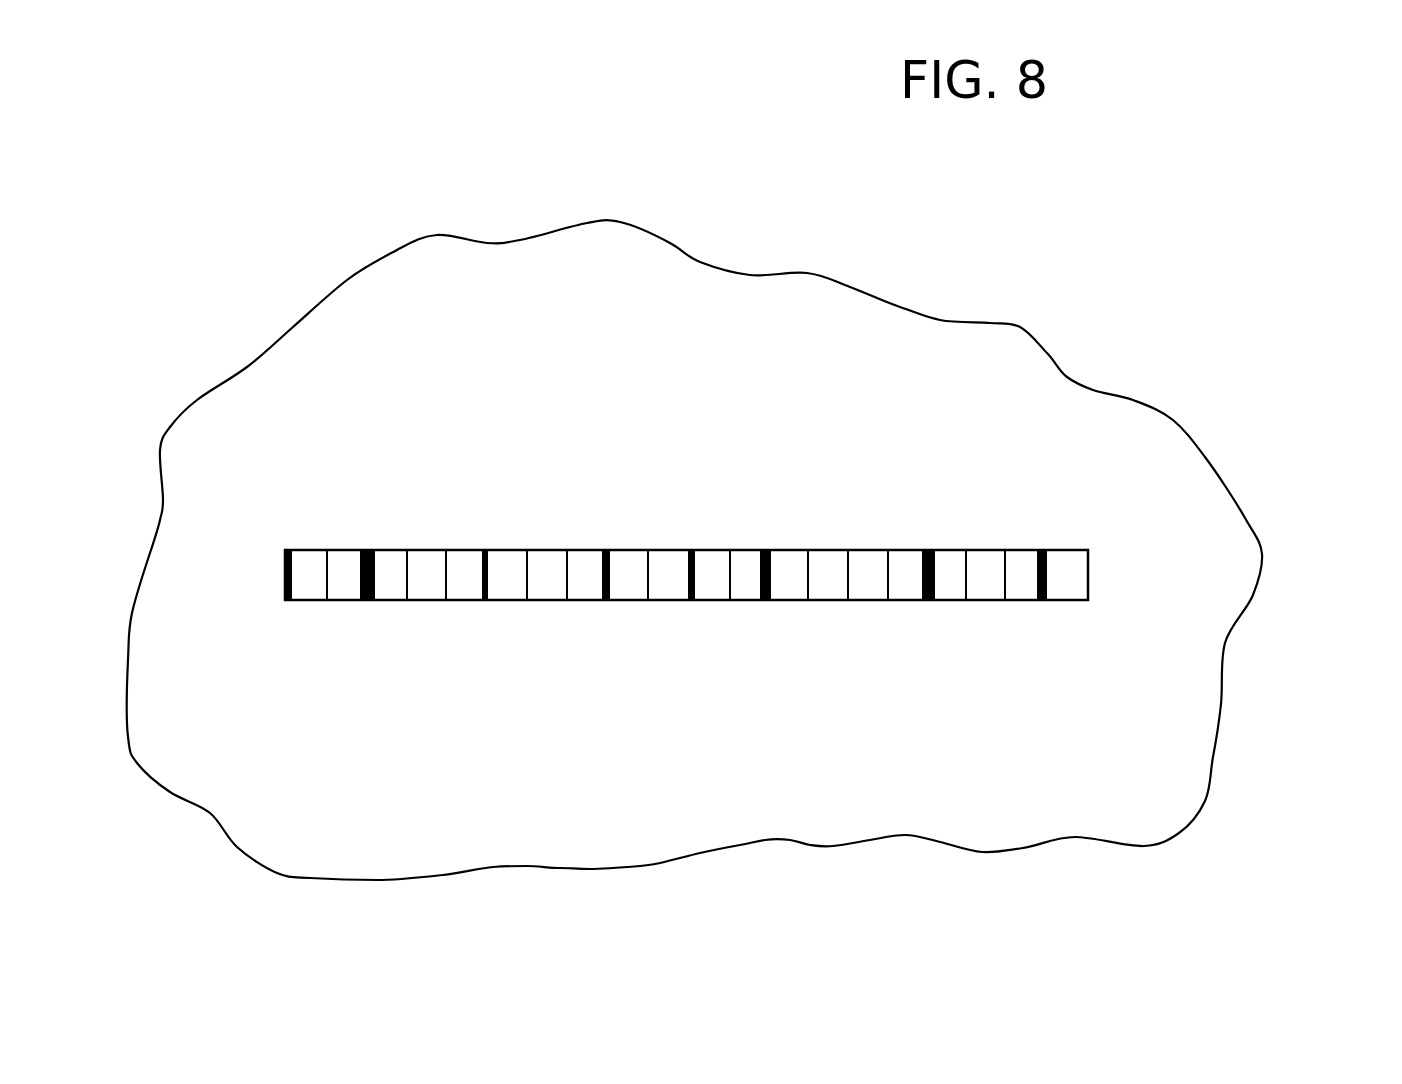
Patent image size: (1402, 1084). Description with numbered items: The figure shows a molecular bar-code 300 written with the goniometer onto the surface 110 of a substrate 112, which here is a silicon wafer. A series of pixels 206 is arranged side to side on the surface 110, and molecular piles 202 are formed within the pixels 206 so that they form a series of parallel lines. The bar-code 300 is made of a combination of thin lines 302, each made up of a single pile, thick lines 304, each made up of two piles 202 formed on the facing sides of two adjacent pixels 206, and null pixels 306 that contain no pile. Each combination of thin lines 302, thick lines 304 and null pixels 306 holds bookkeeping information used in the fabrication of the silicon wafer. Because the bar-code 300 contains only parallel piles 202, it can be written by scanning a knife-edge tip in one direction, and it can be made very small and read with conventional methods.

The surface 110 is at (1189, 497).
The substrate 112 is at (733, 536).
The molecular piles 202 is at (657, 570).
The pixels 206 is at (305, 587).
The molecular bar-code 300 is at (667, 570).
The thin lines 302 is at (495, 536).
The thick lines 304 is at (379, 620).
The null pixels 306 is at (832, 618).